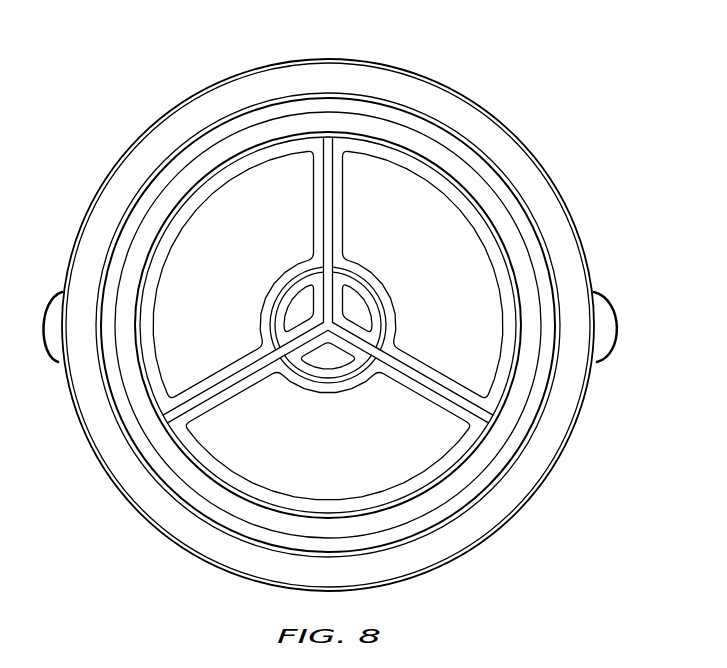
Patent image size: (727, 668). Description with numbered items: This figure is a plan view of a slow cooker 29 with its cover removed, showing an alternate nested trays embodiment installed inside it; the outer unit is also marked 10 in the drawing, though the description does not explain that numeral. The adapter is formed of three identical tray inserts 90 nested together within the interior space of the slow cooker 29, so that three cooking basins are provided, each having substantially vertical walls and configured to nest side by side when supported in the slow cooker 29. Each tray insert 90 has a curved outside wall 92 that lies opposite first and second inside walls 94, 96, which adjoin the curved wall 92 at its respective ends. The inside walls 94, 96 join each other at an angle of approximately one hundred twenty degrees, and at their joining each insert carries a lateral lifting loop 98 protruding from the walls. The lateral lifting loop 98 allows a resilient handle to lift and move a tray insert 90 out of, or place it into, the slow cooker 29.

The tray 10 is at (584, 250).
The slow cooker 29 is at (173, 84).
The tray insert 90 is at (327, 325).
The curved outside wall 92 is at (165, 262).
The first inside wall 94 is at (312, 200).
The second inside wall 96 is at (344, 200).
The lateral lifting loop 98 is at (298, 313).